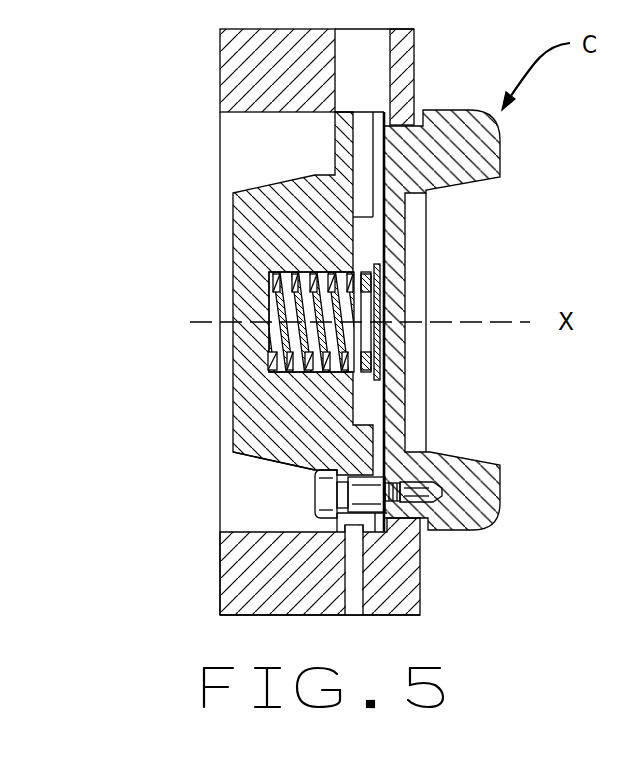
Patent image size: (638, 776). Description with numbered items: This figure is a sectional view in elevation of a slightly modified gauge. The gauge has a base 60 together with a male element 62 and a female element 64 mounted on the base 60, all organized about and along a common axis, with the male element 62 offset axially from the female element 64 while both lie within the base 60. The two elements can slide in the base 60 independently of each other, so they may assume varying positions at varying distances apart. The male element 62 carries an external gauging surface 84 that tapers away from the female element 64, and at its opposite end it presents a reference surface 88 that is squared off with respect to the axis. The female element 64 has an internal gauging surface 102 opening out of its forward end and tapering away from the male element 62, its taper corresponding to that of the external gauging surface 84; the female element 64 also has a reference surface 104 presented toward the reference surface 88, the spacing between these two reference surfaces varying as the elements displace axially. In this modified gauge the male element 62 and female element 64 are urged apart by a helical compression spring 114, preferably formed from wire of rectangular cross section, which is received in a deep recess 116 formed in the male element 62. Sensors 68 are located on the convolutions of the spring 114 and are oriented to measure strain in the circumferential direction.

The base 60 is at (248, 62).
The male element 62 is at (258, 427).
The female element 64 is at (472, 150).
The sensors 68 is at (297, 334).
The external gauging surface 84 is at (272, 463).
The reference surface 88 is at (367, 153).
The internal gauging surface 102 is at (478, 390).
The reference surface 104 is at (378, 240).
The helical compression spring 114 is at (318, 264).
The deep recess 116 is at (273, 305).